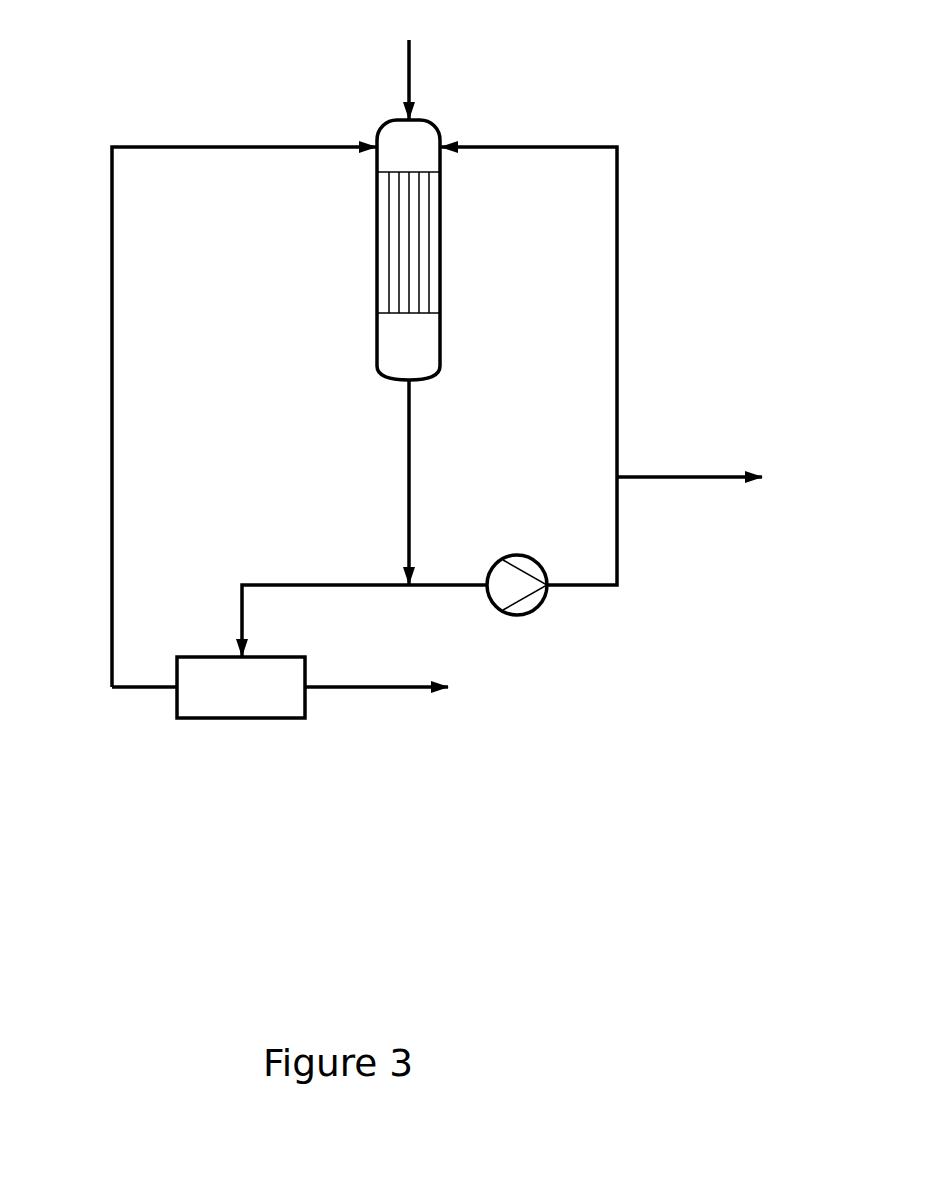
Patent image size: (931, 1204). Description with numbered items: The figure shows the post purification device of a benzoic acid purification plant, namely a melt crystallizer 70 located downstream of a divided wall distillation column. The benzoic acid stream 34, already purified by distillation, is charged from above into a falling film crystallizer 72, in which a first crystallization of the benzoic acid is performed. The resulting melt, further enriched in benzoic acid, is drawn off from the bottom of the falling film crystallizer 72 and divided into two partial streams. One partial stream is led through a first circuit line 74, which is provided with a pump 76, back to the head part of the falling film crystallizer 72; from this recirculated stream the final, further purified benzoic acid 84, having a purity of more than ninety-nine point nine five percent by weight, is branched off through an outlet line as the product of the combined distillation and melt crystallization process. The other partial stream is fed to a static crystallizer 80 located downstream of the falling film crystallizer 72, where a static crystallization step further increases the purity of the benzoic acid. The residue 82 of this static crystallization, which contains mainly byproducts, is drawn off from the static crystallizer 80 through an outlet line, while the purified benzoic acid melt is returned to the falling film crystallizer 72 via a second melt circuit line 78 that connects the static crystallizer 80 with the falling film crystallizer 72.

The melt crystallizer 70 is at (270, 70).
The benzoic acid stream 34 is at (412, 82).
The falling film crystallizer 72 is at (375, 267).
The first circuit line 74 is at (617, 300).
The pump 76 is at (528, 615).
The second melt circuit line 78 is at (112, 435).
The static crystallizer 80 is at (252, 727).
The residue 82 is at (402, 688).
The purified benzoic acid 84 is at (713, 478).